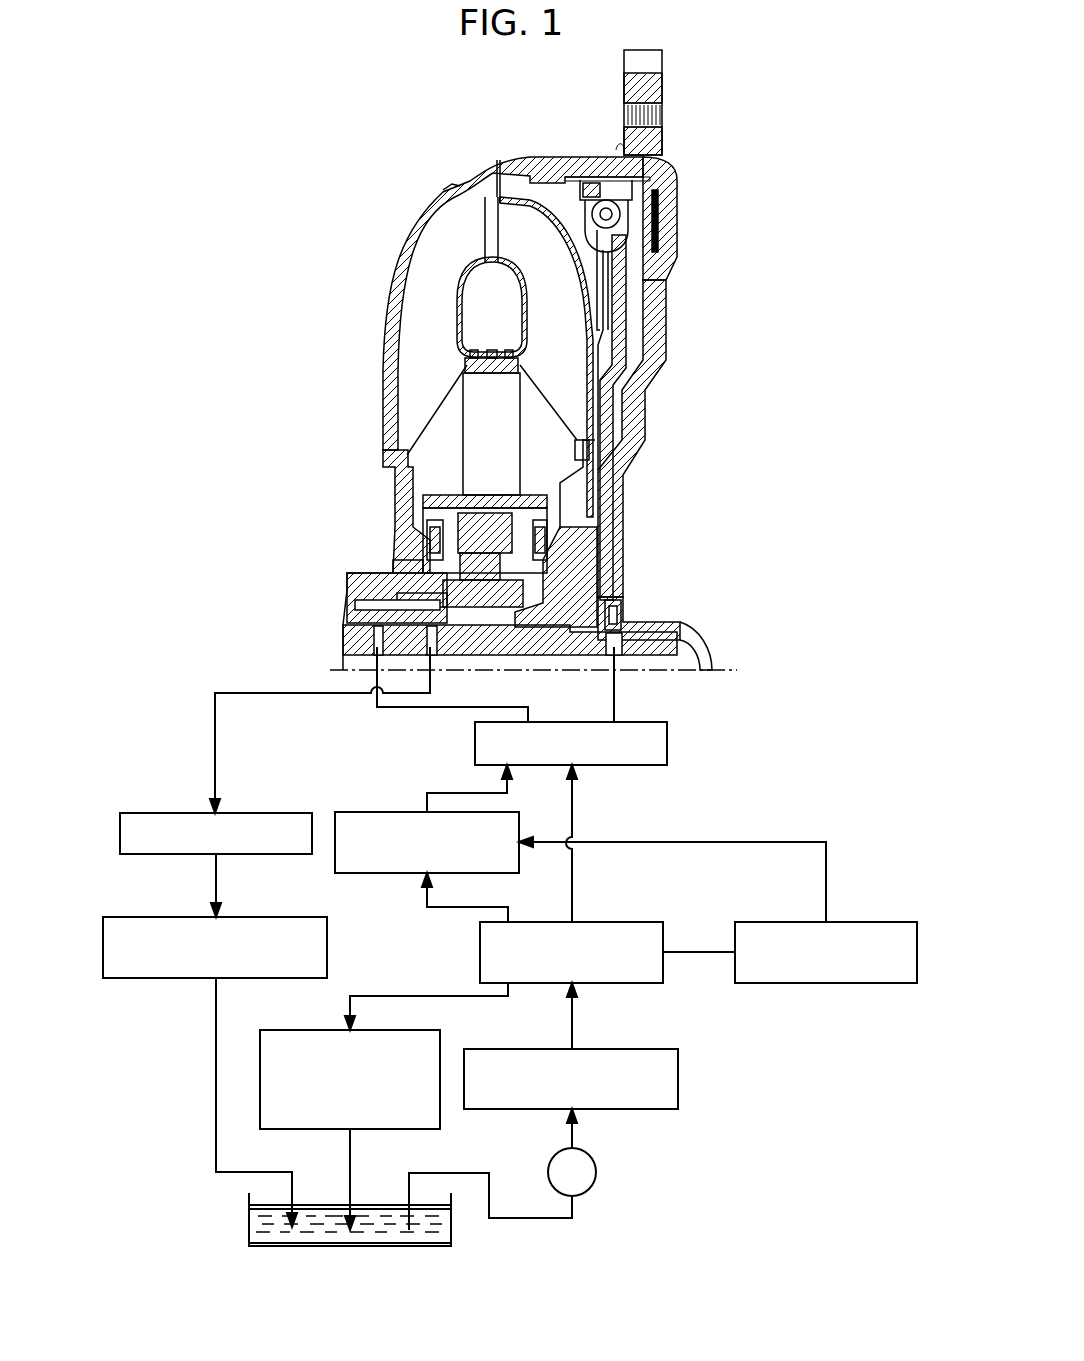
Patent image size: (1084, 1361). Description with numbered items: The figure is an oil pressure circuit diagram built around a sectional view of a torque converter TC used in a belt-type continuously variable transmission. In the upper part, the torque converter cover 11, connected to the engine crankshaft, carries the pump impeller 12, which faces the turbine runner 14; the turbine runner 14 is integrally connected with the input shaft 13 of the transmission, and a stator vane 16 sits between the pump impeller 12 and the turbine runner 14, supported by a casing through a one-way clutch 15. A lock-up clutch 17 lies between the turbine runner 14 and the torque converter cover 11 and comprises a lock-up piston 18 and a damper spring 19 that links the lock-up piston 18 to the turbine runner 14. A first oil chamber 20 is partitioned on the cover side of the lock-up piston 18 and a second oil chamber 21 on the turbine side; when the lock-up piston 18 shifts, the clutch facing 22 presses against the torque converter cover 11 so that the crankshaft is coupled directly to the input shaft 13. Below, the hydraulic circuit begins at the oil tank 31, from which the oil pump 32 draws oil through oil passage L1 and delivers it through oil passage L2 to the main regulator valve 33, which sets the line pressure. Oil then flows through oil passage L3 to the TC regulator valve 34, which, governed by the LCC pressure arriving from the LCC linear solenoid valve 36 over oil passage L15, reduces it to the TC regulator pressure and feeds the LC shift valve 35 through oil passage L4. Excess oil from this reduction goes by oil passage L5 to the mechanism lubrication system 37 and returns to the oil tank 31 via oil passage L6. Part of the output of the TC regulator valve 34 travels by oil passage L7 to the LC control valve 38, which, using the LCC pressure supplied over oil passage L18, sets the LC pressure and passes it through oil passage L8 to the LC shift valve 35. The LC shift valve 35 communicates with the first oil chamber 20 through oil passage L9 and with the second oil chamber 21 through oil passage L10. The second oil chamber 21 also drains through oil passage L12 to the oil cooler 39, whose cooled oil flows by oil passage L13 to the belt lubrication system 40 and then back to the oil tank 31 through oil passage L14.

The torque converter TC is at (730, 197).
The torque converter cover 11 is at (662, 325).
The pump impeller 12 is at (437, 240).
The input shaft 13 is at (555, 648).
The turbine runner 14 is at (530, 225).
The one-way clutch 15 is at (477, 560).
The stator vane 16 is at (480, 393).
The lock-up clutch 17 is at (678, 262).
The lock-up piston 18 is at (615, 410).
The damper spring 19 is at (628, 197).
The first oil chamber 20 is at (635, 372).
The second oil chamber 21 is at (443, 432).
The clutch facing 22 is at (657, 220).
The oil tank 31 is at (451, 1236).
The oil pump 32 is at (597, 1170).
The main regulator valve 33 is at (632, 1049).
The TC regulator valve 34 is at (632, 922).
The LC shift valve 35 is at (655, 765).
The LCC linear solenoid valve 36 is at (888, 922).
The mechanism lubrication system 37 is at (275, 1030).
The LC control valve 38 is at (505, 812).
The oil cooler 39 is at (282, 813).
The belt lubrication system 40 is at (300, 917).
The oil passage L1 is at (557, 1218).
The oil passage L2 is at (572, 1140).
The oil passage L3 is at (572, 1015).
The oil passage L4 is at (572, 812).
The oil passage L5 is at (420, 996).
The oil passage L6 is at (352, 1150).
The oil passage L7 is at (445, 907).
The oil passage L8 is at (445, 788).
The oil passage L9 is at (614, 690).
The oil passage L10 is at (487, 707).
The oil passage L12 is at (278, 693).
The oil passage L13 is at (216, 878).
The oil passage L14 is at (216, 1040).
The oil passage L15 is at (702, 952).
The oil passage L18 is at (762, 842).